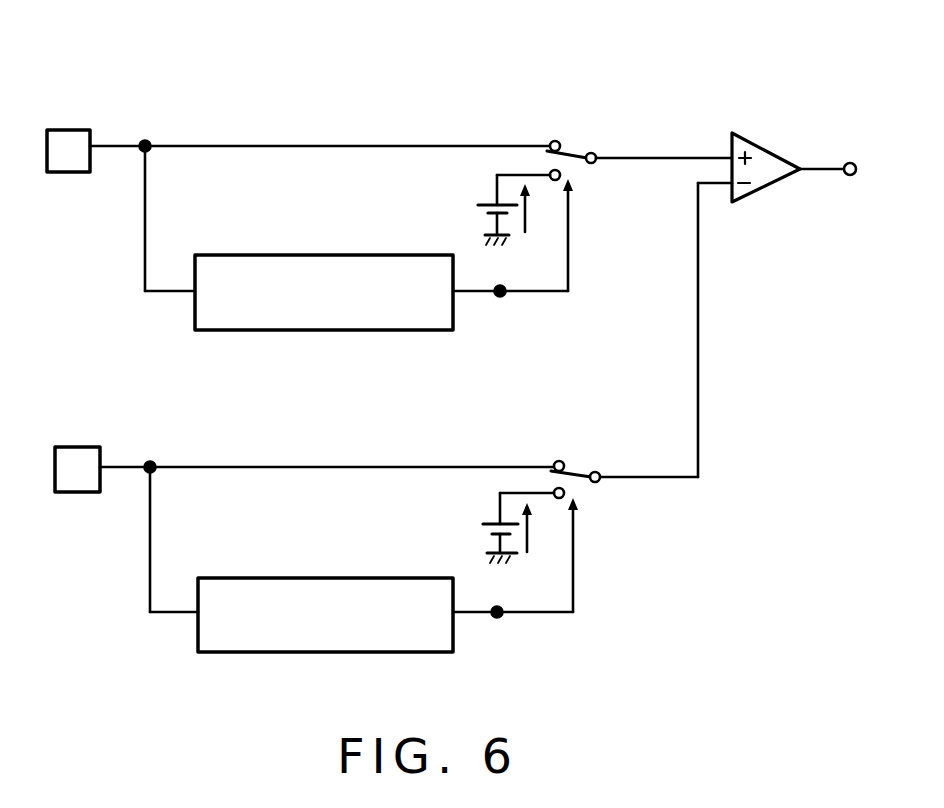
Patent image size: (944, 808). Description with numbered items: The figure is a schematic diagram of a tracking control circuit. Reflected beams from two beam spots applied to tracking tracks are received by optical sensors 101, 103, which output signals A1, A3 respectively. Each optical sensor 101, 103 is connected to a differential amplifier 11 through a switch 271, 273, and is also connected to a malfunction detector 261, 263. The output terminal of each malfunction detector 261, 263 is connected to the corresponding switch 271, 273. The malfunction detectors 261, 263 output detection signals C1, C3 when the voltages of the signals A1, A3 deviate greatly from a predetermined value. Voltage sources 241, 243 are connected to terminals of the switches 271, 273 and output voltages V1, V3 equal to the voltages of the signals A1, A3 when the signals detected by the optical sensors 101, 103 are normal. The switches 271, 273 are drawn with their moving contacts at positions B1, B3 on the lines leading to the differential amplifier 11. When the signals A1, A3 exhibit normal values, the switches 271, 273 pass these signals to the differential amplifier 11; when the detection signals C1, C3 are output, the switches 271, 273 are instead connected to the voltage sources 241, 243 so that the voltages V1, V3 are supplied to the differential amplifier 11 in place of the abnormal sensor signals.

The optical sensor 101 is at (68, 130).
The optical sensor 103 is at (78, 447).
The differential amplifier 11 is at (766, 148).
The malfunction detector 261 is at (268, 255).
The malfunction detector 263 is at (282, 578).
The switch 271 is at (567, 130).
The switch 273 is at (579, 448).
The voltage source 241 is at (478, 214).
The voltage source 243 is at (484, 532).
The signal A1 is at (155, 133).
The signal A3 is at (160, 450).
The first switch output node B1 is at (609, 142).
The third switch output node B3 is at (613, 462).
The detection signal C1 is at (501, 308).
The detection signal C3 is at (505, 630).
The voltage V1 is at (539, 208).
The voltage V3 is at (540, 527).